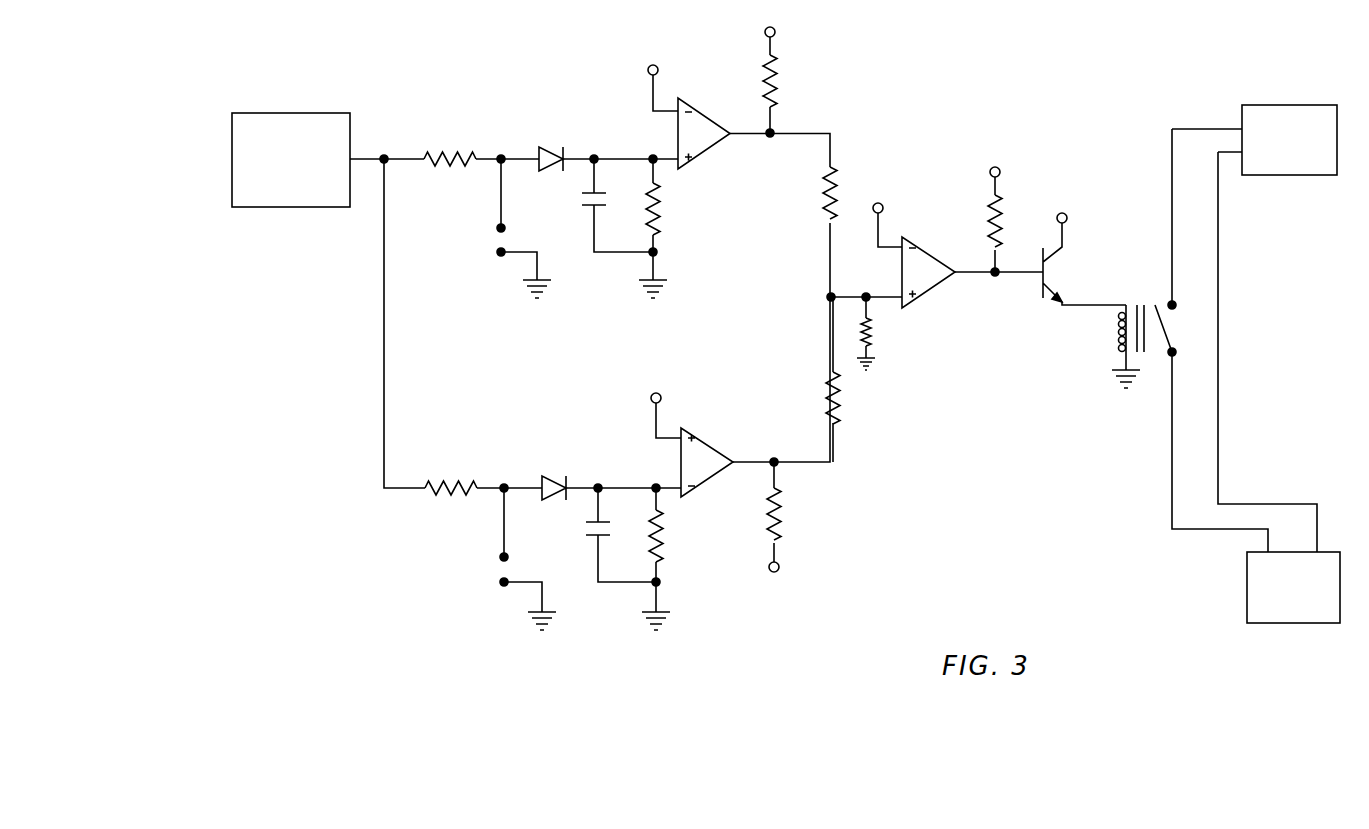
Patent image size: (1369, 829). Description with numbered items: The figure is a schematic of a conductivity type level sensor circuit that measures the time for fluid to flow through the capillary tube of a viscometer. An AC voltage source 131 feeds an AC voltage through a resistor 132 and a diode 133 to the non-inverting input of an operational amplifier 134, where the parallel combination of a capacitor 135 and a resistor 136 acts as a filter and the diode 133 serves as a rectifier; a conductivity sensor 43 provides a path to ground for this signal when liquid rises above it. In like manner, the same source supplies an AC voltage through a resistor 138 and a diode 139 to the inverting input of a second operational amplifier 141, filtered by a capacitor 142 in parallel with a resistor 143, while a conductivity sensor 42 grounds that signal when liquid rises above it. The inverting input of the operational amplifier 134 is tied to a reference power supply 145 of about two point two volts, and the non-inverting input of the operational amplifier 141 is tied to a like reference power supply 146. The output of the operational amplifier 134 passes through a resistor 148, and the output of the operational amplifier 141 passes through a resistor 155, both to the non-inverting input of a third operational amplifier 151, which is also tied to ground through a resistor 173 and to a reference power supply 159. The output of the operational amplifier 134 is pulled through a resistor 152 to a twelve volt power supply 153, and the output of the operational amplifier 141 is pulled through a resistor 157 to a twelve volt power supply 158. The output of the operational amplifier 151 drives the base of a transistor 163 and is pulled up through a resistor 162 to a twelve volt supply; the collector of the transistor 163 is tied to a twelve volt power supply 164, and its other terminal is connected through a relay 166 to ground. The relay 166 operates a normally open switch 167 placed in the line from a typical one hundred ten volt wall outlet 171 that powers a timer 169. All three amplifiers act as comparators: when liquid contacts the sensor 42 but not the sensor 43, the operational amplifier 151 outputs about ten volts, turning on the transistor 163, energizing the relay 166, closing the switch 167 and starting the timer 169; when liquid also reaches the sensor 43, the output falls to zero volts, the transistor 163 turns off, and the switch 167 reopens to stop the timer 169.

The AC voltage source 131 is at (290, 207).
The resistor 132 is at (449, 150).
The diode 133 is at (542, 147).
The operational amplifier 134 is at (700, 154).
The capacitor 135 is at (589, 207).
The resistor 136 is at (660, 212).
The conductivity sensor 43 is at (498, 252).
The conductivity sensor 42 is at (500, 580).
The resistor 138 is at (452, 481).
The diode 139 is at (546, 476).
The operational amplifier 141 is at (702, 486).
The capacitor 142 is at (590, 527).
The resistor 143 is at (660, 549).
The +2.2 volt power supply 145 is at (649, 65).
The +2.2 volt power supply 146 is at (657, 392).
The resistor 148 is at (828, 202).
The operational amplifier 151 is at (932, 300).
The resistor 152 is at (778, 84).
The +12 volt power supply 153 is at (766, 28).
The resistor 155 is at (840, 393).
The resistor 157 is at (783, 516).
The +12 volt power supply 158 is at (774, 572).
The +2.2 volt power supply 159 is at (878, 203).
The resistor 162 is at (990, 220).
The transistor 163 is at (1043, 290).
The +12 volt power supply 164 is at (1064, 212).
The relay 166 is at (1118, 339).
The normally open switch 167 is at (1166, 334).
The timer 169 is at (1286, 105).
The 110 volt wall outlet 171 is at (1293, 623).
The resistor 173 is at (871, 340).